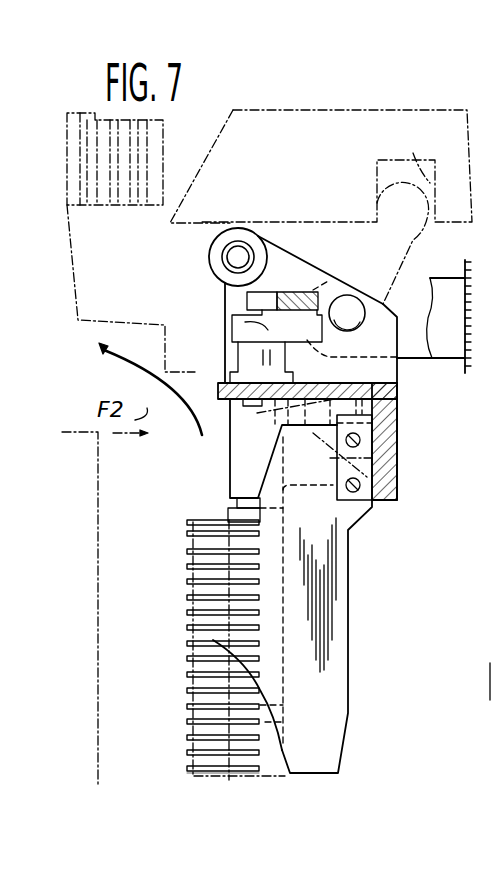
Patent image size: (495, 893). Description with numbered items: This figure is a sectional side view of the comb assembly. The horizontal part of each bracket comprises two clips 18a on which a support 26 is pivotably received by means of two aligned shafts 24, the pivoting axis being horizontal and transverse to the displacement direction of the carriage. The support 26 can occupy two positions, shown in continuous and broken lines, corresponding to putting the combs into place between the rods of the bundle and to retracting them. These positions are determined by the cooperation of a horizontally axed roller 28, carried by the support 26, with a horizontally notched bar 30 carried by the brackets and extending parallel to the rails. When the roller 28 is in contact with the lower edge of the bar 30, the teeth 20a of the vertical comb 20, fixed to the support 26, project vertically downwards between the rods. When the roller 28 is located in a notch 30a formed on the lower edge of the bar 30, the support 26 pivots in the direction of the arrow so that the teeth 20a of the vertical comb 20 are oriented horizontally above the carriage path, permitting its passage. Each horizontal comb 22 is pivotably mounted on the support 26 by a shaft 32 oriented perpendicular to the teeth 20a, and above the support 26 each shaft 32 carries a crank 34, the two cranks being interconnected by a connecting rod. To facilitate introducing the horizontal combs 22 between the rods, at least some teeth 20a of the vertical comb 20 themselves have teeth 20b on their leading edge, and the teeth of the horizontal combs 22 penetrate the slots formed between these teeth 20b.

The clips 18a is at (406, 352).
The vertical comb 20 is at (352, 642).
The teeth 20a is at (300, 708).
The teeth 20b is at (192, 612).
The horizontal comb 22 is at (181, 752).
The shaft 24 is at (345, 308).
The support 26 is at (397, 477).
The roller 28 is at (247, 233).
The notched bar 30 is at (268, 110).
The notch 30a is at (413, 153).
The shaft 32 is at (250, 360).
The crank 34 is at (257, 327).